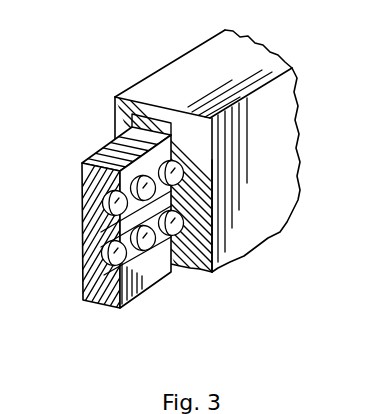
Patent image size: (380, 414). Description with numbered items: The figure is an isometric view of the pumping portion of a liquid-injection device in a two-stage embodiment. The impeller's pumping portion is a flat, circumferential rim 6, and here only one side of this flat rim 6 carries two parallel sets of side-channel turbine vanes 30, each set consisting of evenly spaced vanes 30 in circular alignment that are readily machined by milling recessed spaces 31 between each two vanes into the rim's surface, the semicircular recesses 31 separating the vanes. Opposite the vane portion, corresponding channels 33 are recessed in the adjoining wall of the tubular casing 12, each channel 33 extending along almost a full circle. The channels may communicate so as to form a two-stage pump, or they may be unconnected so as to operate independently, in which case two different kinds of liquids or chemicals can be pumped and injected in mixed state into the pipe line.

The tubular casing 12 is at (227, 205).
The flat circumferential rim 6 is at (91, 242).
The radial vanes 30 is at (159, 252).
The semicircular recesses 31 is at (114, 273).
The channel 33 is at (261, 238).